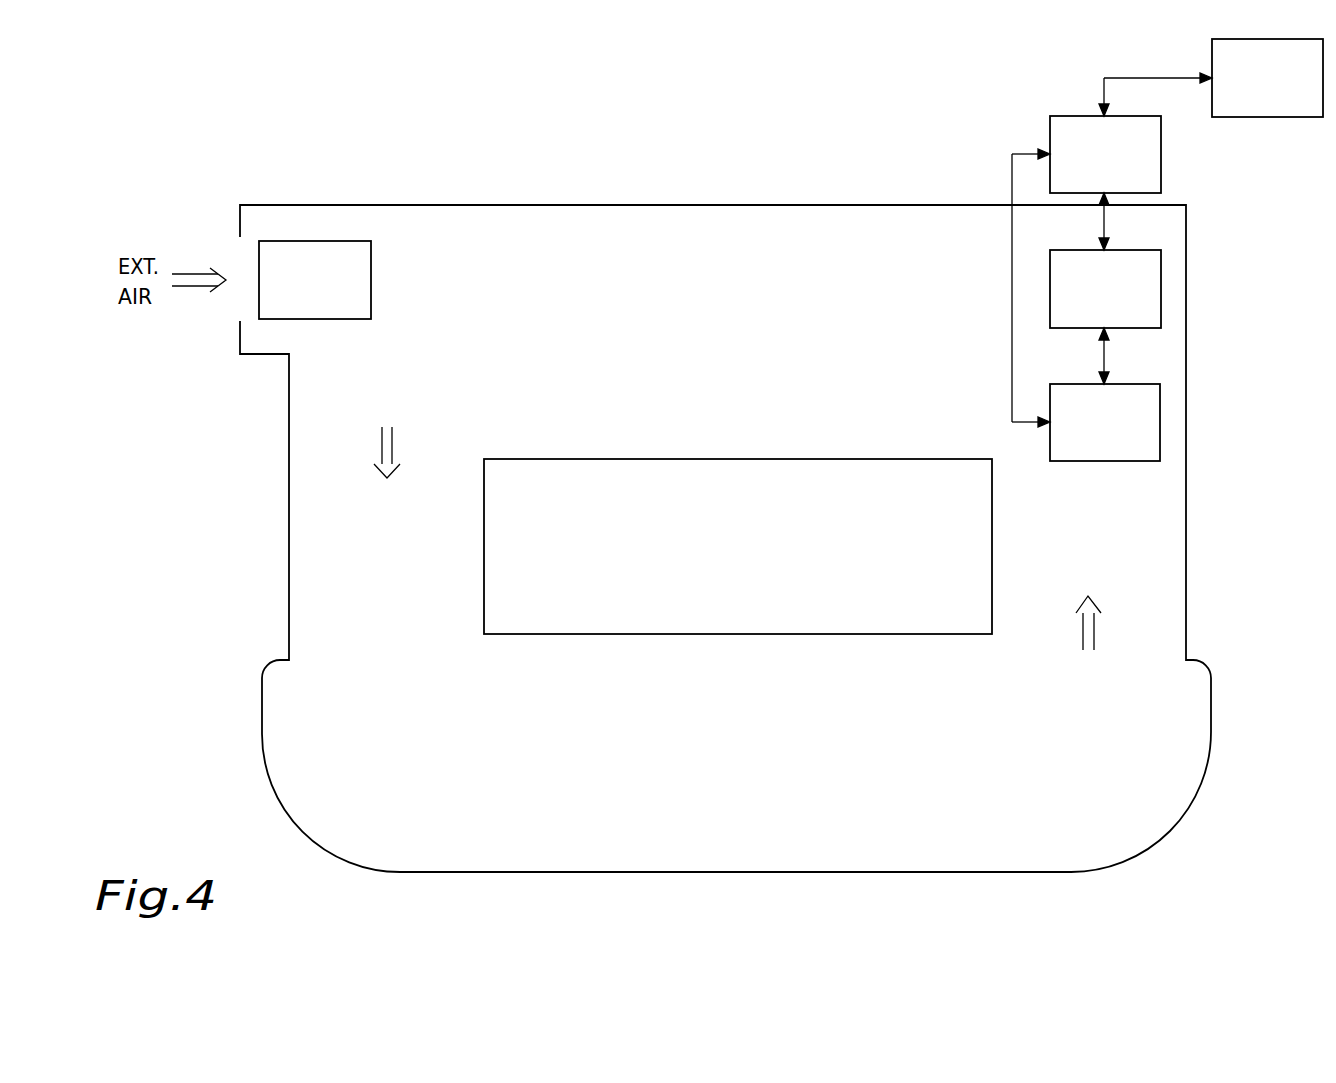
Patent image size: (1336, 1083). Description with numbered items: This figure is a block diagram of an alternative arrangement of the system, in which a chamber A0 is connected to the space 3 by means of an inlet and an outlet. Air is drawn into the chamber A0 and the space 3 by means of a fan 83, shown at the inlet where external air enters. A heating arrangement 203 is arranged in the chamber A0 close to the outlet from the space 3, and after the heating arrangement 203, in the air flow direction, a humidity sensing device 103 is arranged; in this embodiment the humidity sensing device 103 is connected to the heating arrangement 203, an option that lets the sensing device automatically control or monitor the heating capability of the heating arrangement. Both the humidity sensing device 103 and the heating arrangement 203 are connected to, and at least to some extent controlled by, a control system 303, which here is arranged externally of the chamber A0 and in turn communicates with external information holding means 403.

The space 3 is at (732, 738).
The chamber A0 is at (740, 376).
The fan 83 is at (313, 241).
The control system 303 is at (1068, 116).
The external information holding means 403 is at (1267, 117).
The humidity sensing device 103 is at (1161, 287).
The heating arrangement 203 is at (1161, 420).